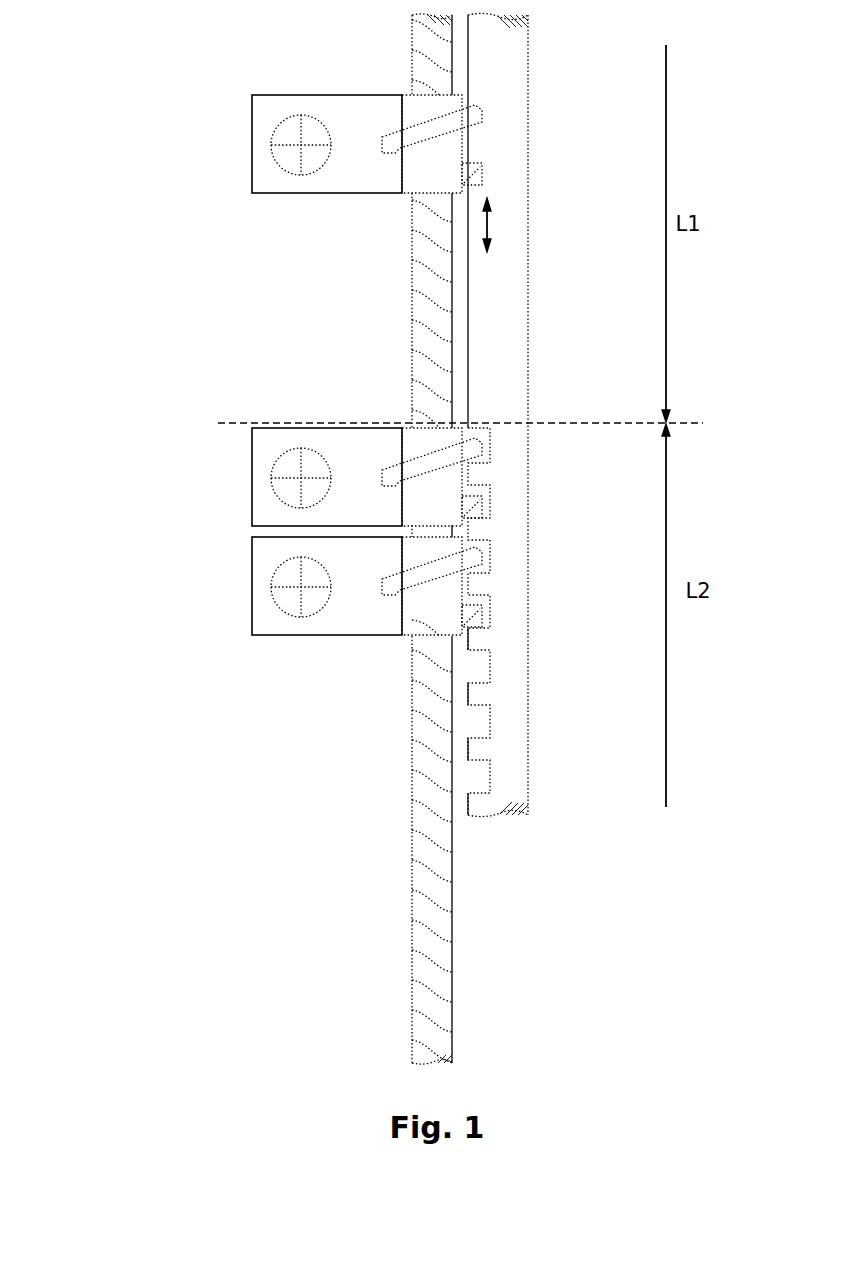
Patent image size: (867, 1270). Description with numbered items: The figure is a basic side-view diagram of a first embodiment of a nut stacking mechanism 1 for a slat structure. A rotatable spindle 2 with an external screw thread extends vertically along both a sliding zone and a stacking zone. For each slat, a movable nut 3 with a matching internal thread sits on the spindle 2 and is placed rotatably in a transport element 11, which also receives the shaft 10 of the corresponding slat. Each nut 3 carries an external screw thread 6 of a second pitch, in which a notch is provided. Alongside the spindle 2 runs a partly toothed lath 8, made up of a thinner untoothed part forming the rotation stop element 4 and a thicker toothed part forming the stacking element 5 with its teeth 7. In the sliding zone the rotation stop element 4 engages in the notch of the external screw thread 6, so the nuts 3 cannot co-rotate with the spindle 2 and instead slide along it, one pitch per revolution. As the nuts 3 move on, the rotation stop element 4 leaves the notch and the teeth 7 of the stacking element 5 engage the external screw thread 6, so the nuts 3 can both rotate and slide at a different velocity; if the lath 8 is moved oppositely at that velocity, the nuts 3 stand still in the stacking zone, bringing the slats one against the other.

The nut stacking mechanism 1 is at (130, 175).
The spindle 2 is at (418, 905).
The movable nut 3 is at (450, 146).
The rotation stop element 4 is at (507, 211).
The stacking element 5 is at (551, 621).
The external screw thread 6 is at (478, 112).
The teeth 7 is at (482, 803).
The partly toothed lath 8 is at (534, 320).
The shaft 10 is at (290, 130).
The transport element 11 is at (330, 182).